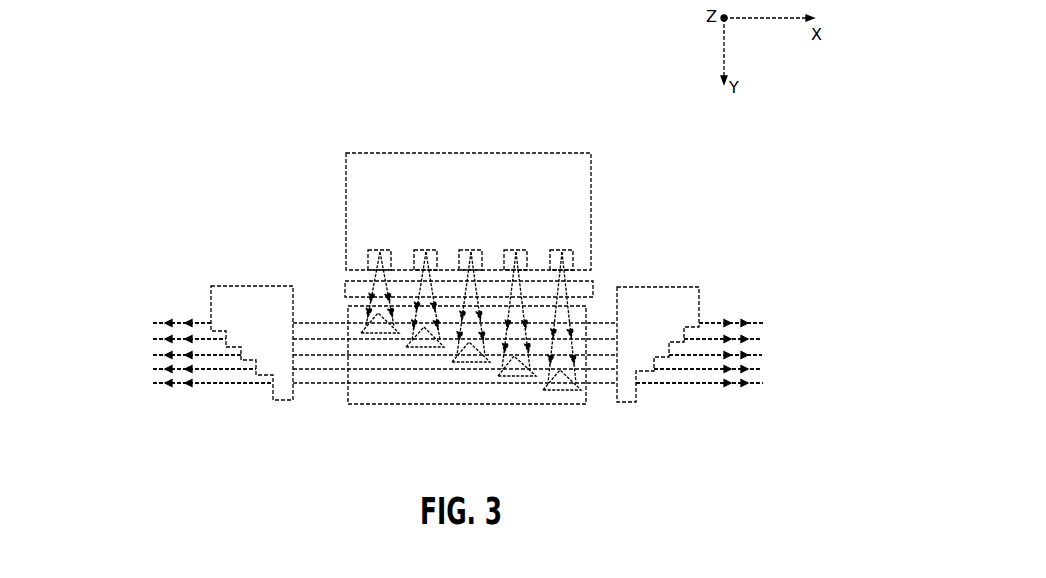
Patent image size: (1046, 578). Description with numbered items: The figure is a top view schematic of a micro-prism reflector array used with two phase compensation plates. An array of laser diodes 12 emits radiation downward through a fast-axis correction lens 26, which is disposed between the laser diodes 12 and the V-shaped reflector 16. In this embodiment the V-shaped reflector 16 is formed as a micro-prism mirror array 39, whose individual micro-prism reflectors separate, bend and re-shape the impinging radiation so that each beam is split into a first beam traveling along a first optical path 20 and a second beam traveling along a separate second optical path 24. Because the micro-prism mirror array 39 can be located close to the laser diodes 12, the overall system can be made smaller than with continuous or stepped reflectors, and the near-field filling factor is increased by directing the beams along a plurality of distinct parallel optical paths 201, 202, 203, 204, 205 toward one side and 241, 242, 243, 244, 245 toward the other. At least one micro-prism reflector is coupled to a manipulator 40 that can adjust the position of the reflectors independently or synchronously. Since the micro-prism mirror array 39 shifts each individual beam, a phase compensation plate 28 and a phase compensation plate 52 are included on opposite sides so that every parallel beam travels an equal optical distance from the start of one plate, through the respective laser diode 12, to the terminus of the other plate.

The laser diodes 12 is at (592, 263).
The fast-axis correction lens 26 is at (594, 290).
The V-shaped reflector 16 is at (484, 404).
The micro-prism mirror array 39 is at (375, 404).
The manipulator 40 is at (527, 397).
The phase compensation plate 52 is at (283, 402).
The phase compensation plate 28 is at (619, 403).
The second optical path 24 is at (209, 322).
The first parallel optical path of the second optical paths 241 is at (153, 323).
The second parallel optical path of the second optical paths 242 is at (153, 339).
The third parallel optical path of the second optical paths 243 is at (153, 355).
The fourth parallel optical path of the second optical paths 244 is at (153, 369).
The fifth parallel optical path of the second optical paths 245 is at (153, 383).
The first optical path 20 is at (703, 323).
The first parallel optical path of the first optical paths 201 is at (765, 323).
The second parallel optical path of the first optical paths 202 is at (762, 339).
The third parallel optical path of the first optical paths 203 is at (762, 355).
The fourth parallel optical path of the first optical paths 204 is at (762, 369).
The fifth parallel optical path of the first optical paths 205 is at (763, 383).